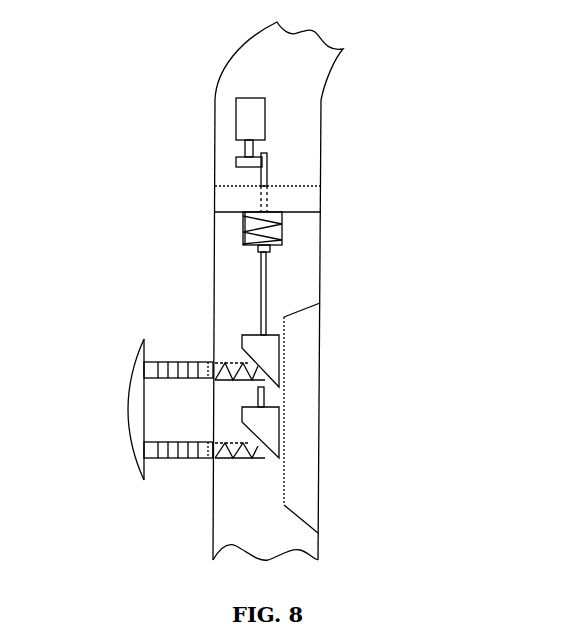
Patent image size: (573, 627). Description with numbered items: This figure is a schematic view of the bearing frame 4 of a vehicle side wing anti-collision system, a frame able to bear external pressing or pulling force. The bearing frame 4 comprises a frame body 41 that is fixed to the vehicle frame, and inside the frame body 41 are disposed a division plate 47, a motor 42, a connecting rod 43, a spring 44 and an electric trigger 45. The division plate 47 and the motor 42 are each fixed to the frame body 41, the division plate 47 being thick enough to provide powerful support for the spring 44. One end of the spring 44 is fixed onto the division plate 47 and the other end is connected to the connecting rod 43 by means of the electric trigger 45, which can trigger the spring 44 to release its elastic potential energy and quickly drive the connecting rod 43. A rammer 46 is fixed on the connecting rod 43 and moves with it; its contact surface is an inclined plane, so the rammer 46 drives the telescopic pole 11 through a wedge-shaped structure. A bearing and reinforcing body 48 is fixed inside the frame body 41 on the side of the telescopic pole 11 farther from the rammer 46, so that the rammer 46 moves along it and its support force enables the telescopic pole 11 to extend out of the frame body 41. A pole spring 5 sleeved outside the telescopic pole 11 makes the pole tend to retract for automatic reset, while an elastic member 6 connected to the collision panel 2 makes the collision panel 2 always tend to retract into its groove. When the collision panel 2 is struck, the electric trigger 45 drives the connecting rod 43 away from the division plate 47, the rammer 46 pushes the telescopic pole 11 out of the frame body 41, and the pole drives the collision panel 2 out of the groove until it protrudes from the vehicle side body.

The collision panel 2 is at (132, 370).
The bearing frame 4 is at (186, 136).
The pole spring 5 is at (258, 458).
The elastic member 6 is at (168, 458).
The telescopic pole 11 is at (230, 460).
The frame body 41 is at (213, 265).
The motor 42 is at (264, 118).
The connecting rod 43 is at (267, 297).
The spring 44 is at (282, 223).
The electric trigger 45 is at (268, 248).
The rammer 46 is at (242, 340).
The division plate 47 is at (305, 201).
The bearing and reinforcing body 48 is at (302, 385).